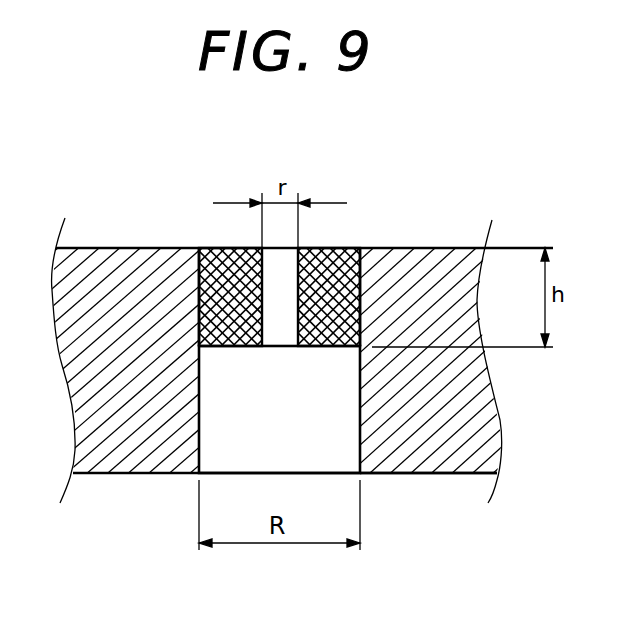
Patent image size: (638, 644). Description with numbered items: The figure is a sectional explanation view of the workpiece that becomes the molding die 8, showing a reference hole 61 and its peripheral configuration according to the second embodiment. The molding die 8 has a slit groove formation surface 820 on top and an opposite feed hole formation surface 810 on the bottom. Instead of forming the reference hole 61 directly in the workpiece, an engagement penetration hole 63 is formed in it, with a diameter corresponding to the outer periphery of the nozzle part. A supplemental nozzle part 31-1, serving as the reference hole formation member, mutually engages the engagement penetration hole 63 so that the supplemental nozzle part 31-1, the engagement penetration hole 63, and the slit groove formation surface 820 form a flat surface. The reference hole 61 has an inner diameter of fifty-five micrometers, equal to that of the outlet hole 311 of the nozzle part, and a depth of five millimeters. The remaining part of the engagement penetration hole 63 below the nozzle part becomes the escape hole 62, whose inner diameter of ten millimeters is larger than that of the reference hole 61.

The molding die 8 is at (414, 226).
The slit groove formation surface 820 is at (102, 247).
The feed hole formation surface 810 is at (112, 474).
The escape hole 62 is at (403, 474).
The engagement penetration hole 63 is at (199, 428).
The reference hole 61 is at (228, 236).
The outlet hole 311 is at (262, 306).
The supplemental nozzle part 31-1 is at (332, 275).